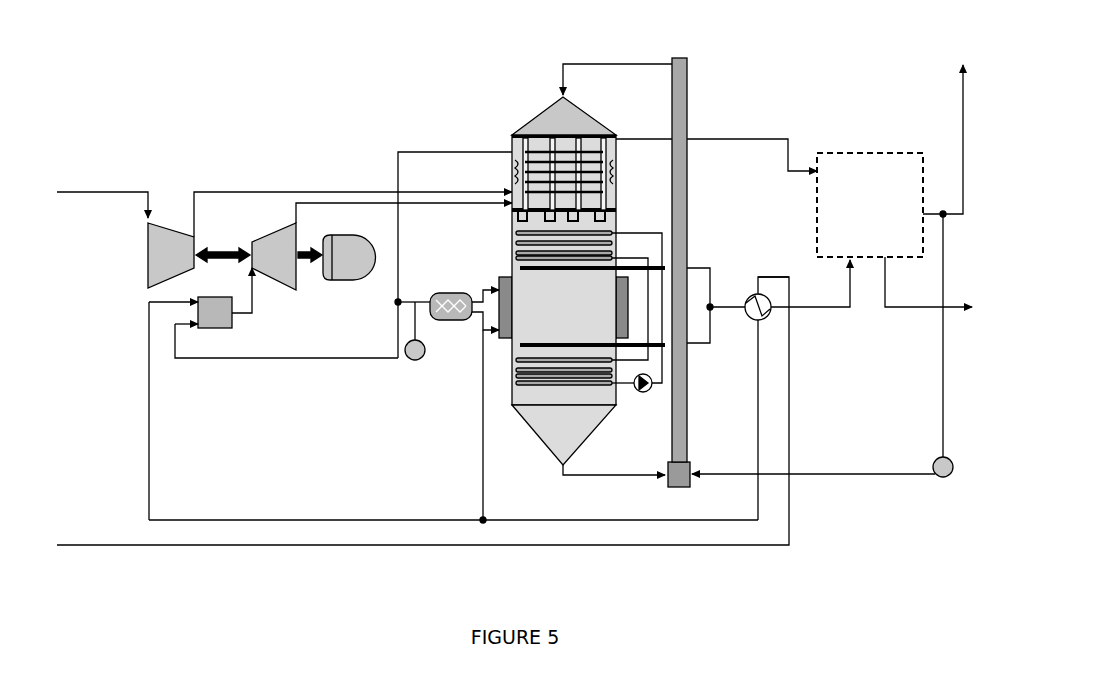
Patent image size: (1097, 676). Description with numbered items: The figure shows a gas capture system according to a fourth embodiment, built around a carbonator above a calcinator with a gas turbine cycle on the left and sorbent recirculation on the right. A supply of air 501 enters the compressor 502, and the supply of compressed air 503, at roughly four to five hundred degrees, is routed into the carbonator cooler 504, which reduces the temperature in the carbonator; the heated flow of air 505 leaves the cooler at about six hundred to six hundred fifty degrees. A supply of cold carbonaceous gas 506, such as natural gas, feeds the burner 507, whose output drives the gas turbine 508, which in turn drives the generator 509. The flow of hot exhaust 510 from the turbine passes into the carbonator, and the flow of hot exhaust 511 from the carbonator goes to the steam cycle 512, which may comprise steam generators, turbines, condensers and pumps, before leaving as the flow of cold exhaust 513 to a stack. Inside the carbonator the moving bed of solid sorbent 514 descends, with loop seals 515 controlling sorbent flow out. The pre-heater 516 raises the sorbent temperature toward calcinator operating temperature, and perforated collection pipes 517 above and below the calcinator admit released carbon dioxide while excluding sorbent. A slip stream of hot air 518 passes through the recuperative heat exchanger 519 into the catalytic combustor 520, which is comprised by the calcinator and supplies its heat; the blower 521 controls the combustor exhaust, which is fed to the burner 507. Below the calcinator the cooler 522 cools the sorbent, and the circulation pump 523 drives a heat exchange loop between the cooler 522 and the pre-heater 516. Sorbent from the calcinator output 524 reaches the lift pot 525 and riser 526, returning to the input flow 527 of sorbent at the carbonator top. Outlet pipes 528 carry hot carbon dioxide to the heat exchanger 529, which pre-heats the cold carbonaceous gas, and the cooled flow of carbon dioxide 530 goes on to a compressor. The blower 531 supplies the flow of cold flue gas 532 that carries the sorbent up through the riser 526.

The supply of air to compressor 501 is at (105, 192).
The compressor 502 is at (170, 237).
The supply of compressed air to the carbonator cooler 503 is at (373, 190).
The carbonator cooler 504 is at (537, 162).
The flow of air from the carbonator cooler 505 is at (428, 148).
The supply of cold carbonaceous gas 506 is at (108, 545).
The burner 507 is at (220, 313).
The gas turbine 508 is at (277, 243).
The generator 509 is at (347, 243).
The flow of hot exhaust from the gas turbine to carbonator 510 is at (307, 203).
The flow of hot exhaust from carbonator 511 is at (737, 140).
The steam cycle 512 is at (866, 193).
The flow of cold exhaust to a stack 513 is at (962, 137).
The moving bed of solid sorbent 514 is at (555, 147).
The loop seals 515 is at (518, 215).
The pre-heater 516 is at (525, 242).
The perforated collection pipes 517 is at (523, 268).
The slip stream of hot air 518 is at (416, 300).
The recuperative heat exchanger 519 is at (443, 318).
The catalytic combustor 520 is at (527, 290).
The blower 521 is at (407, 357).
The cooler 522 is at (550, 370).
The circulation pump 523 is at (643, 393).
The bottom outlet line 524 is at (592, 475).
The lift pot 525 is at (670, 482).
The riser 526 is at (683, 118).
The input flow of sorbent to the carbonator 527 is at (641, 64).
The outlet pipes of carbon dioxide 528 is at (712, 283).
The heat exchanger 529 is at (752, 315).
The cooled flow of carbon dioxide to a compressor 530 is at (898, 308).
The blower 531 is at (935, 462).
The flow of cold flue gas 532 is at (878, 473).